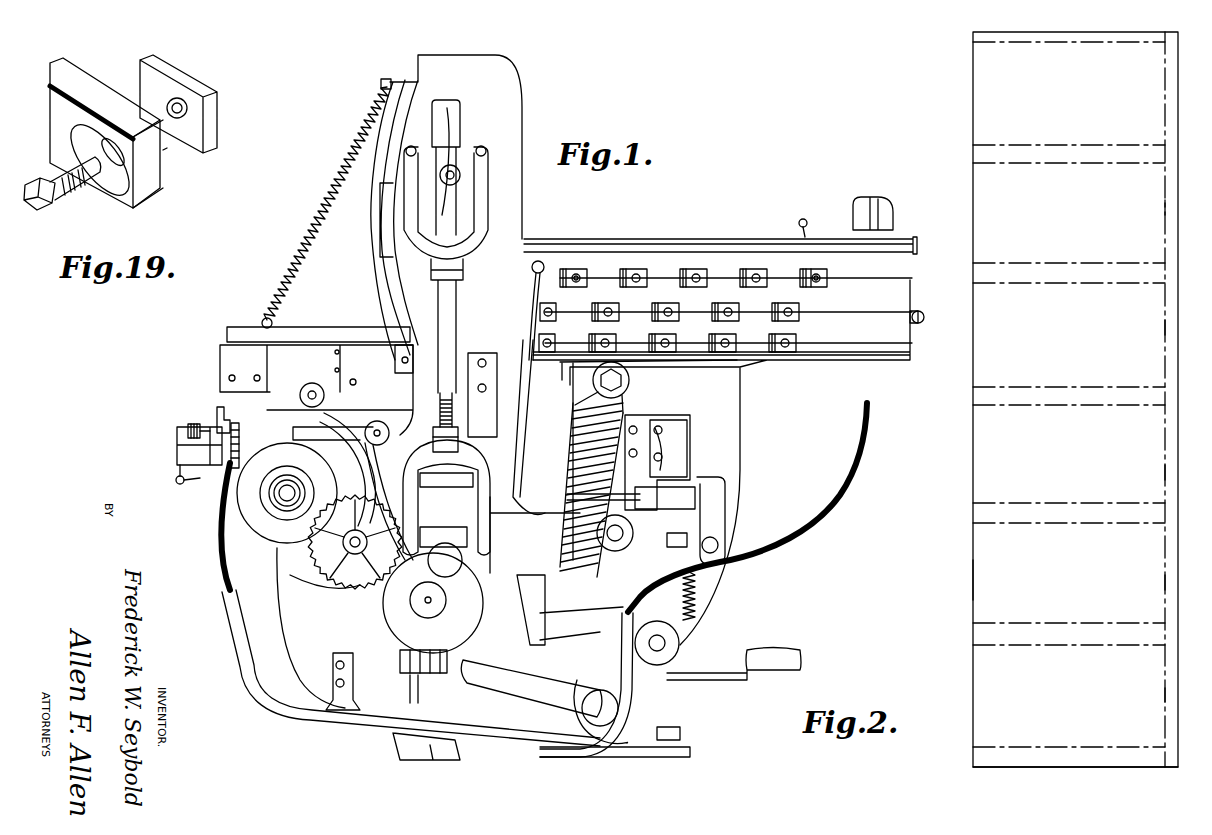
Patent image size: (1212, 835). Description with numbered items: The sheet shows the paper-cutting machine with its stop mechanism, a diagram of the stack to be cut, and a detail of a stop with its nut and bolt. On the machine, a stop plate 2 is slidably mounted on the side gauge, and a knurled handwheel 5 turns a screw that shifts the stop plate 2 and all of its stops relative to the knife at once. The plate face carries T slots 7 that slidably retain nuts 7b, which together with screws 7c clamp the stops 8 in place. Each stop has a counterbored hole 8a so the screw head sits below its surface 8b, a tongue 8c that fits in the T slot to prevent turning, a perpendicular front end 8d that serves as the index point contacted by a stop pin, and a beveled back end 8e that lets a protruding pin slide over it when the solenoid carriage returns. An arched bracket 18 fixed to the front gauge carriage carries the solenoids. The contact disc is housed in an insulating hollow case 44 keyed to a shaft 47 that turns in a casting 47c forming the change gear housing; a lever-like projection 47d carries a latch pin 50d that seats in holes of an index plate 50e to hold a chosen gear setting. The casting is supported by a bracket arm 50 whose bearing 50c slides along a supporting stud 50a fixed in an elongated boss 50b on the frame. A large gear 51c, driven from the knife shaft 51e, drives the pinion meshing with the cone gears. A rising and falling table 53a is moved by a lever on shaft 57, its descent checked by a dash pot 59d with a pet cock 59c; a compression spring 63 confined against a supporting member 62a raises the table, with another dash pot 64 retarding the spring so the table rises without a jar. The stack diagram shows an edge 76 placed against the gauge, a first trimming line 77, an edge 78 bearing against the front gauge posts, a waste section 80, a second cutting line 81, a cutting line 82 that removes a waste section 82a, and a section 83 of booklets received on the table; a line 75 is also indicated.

In FIG. 1, the stop plate 2 is at (702, 258).
In FIG. 1, the knurled handwheel 5 is at (920, 310).
In FIG. 1, the T slots 7 is at (658, 278).
In FIG. 19, the nuts 7b is at (207, 117).
In FIG. 19, the screws 7c is at (62, 193).
In FIG. 1, the screws 7c is at (823, 278).
In FIG. 1, the stops 8 is at (600, 242).
In FIG. 19, the counterbored hole 8a is at (80, 127).
In FIG. 1, the counterbored hole 8a is at (822, 285).
In FIG. 19, the surface of the stop 8b is at (123, 147).
In FIG. 19, the tongue 8c is at (167, 153).
In FIG. 19, the front end 8d is at (143, 193).
In FIG. 19, the back end 8e is at (50, 80).
In FIG. 1, the back end 8e is at (578, 238).
In FIG. 1, the bracket 18 is at (878, 203).
In FIG. 1, the hollow case 44 is at (243, 517).
In FIG. 1, the shaft 47 is at (287, 505).
In FIG. 1, the casting 47c is at (327, 440).
In FIG. 1, the lever-like projection 47d is at (217, 415).
In FIG. 1, the bracket arm 50 is at (313, 422).
In FIG. 1, the supporting stud 50a is at (430, 560).
In FIG. 1, the elongated boss 50b is at (377, 421).
In FIG. 1, the bearing 50c is at (403, 457).
In FIG. 1, the latch pin 50d is at (188, 430).
In FIG. 1, the index plate 50e is at (239, 440).
In FIG. 1, the large gear 51c is at (340, 580).
In FIG. 1, the shaft 51e is at (427, 607).
In FIG. 1, the rising and falling table 53a is at (250, 332).
In FIG. 1, the shaft 57 is at (308, 390).
In FIG. 1, the pet cock 59c is at (176, 482).
In FIG. 1, the dash pot 59d is at (177, 455).
In FIG. 1, the supporting member 62a is at (383, 82).
In FIG. 1, the compression spring 63 is at (318, 200).
In FIG. 1, the dash pot 64 is at (217, 470).
In FIG. 2, the perforation line 75 is at (1070, 263).
In FIG. 2, the edge 76 is at (973, 572).
In FIG. 2, the line 77 is at (1165, 613).
In FIG. 2, the edge 78 is at (1060, 767).
In FIG. 2, the section 80 is at (1085, 37).
In FIG. 2, the line 81 is at (1037, 145).
In FIG. 2, the cutting line 82 is at (1035, 165).
In FIG. 2, the waste section 82a is at (1098, 153).
In FIG. 2, the section 83 is at (1013, 470).